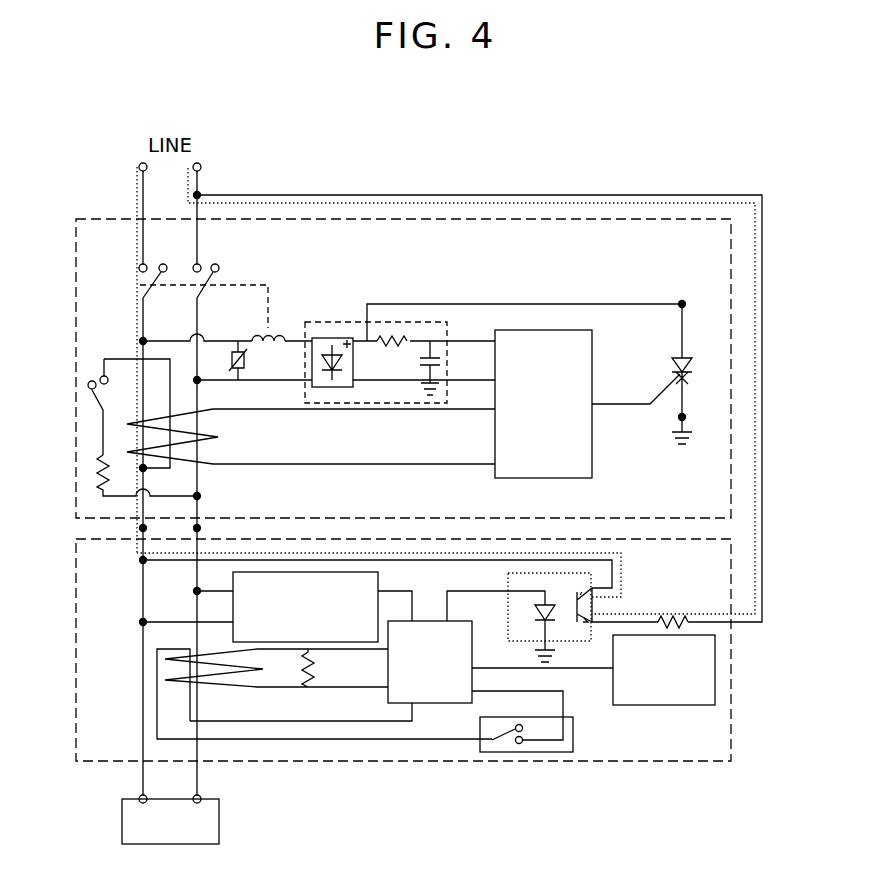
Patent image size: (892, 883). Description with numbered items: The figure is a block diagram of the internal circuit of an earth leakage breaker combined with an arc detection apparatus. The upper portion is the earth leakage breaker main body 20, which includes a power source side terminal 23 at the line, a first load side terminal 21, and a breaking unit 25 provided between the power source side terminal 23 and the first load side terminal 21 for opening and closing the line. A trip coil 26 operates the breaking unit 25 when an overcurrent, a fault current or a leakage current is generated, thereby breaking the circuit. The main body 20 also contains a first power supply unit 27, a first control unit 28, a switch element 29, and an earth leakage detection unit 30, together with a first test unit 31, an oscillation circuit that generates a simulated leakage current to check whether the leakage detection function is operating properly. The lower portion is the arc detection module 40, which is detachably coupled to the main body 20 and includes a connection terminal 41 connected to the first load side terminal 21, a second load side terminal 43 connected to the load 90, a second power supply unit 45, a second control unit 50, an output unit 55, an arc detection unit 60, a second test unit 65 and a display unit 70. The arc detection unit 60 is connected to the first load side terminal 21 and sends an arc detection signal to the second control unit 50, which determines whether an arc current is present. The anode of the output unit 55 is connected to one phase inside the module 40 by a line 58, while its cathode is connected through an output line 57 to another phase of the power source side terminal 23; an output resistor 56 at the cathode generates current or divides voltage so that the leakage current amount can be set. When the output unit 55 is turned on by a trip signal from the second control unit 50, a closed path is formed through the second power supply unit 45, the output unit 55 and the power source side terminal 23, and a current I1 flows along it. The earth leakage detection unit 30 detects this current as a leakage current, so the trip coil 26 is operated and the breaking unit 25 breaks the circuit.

The earth leakage breaker main body 20 is at (76, 343).
The first load side terminal 21 is at (135, 503).
The power source side terminal 23 is at (140, 190).
The breaking unit 25 is at (145, 290).
The trip coil 26 is at (282, 335).
The first power supply unit 27 is at (326, 322).
The first control unit 28 is at (543, 330).
The switch element 29 is at (688, 355).
The earth leakage detection unit 30 is at (188, 460).
The first test unit 31 is at (95, 401).
The arc detection module 40 is at (76, 622).
The connection terminal 41 is at (138, 547).
The second load side terminal 43 is at (143, 779).
The second power supply unit 45 is at (310, 572).
The second control unit 50 is at (432, 705).
The output unit 55 is at (508, 585).
The output resistor 56 is at (665, 617).
The output line 57 is at (762, 340).
The power line 58 is at (372, 560).
The arc detection unit 60 is at (212, 688).
The second test unit 65 is at (525, 752).
The display unit 70 is at (715, 668).
The load 90 is at (219, 822).
The current I1 is at (755, 392).